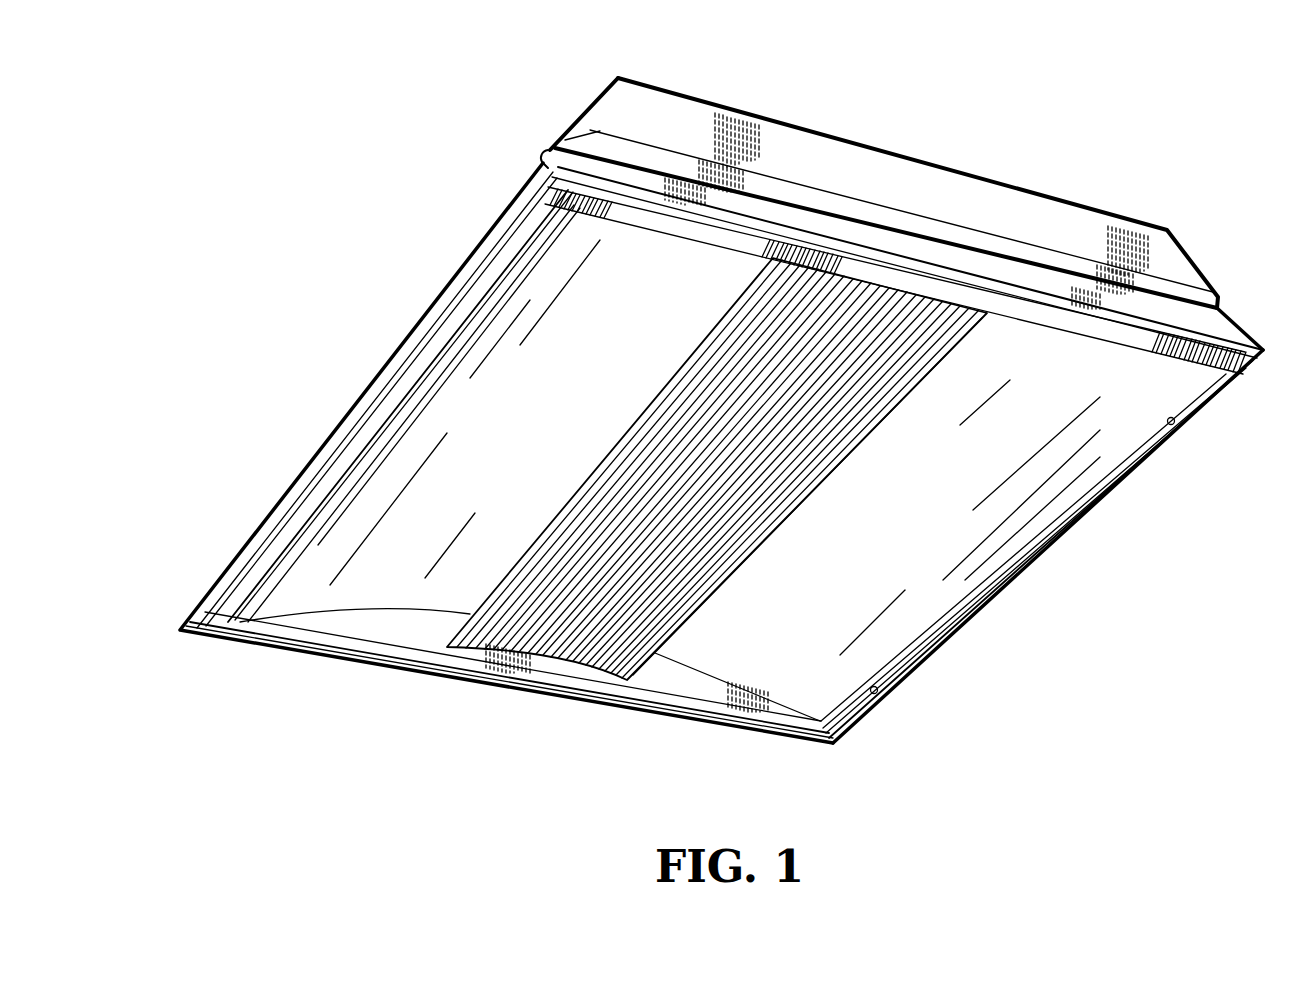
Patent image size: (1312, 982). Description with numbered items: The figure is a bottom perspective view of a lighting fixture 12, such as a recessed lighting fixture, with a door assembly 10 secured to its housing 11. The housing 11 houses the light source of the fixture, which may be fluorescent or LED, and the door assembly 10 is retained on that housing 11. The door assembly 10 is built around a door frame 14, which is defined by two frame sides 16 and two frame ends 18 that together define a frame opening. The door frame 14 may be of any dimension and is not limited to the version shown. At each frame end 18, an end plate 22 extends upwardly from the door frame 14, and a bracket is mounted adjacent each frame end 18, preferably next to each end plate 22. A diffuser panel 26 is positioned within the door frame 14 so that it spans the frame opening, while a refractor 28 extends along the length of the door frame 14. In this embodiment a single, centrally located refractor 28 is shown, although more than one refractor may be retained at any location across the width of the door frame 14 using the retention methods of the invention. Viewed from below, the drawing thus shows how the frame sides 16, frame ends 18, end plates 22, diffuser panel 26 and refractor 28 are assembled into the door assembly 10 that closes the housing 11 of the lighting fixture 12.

The door assembly 10 is at (995, 682).
The housing 11 is at (660, 125).
The lighting fixture 12 is at (372, 160).
The door frame 14 is at (228, 632).
The frame sides 16 is at (298, 516).
The frame ends 18 is at (1225, 325).
The end plate 22 is at (692, 683).
The diffuser panel 26 is at (390, 565).
The refractor 28 is at (860, 330).